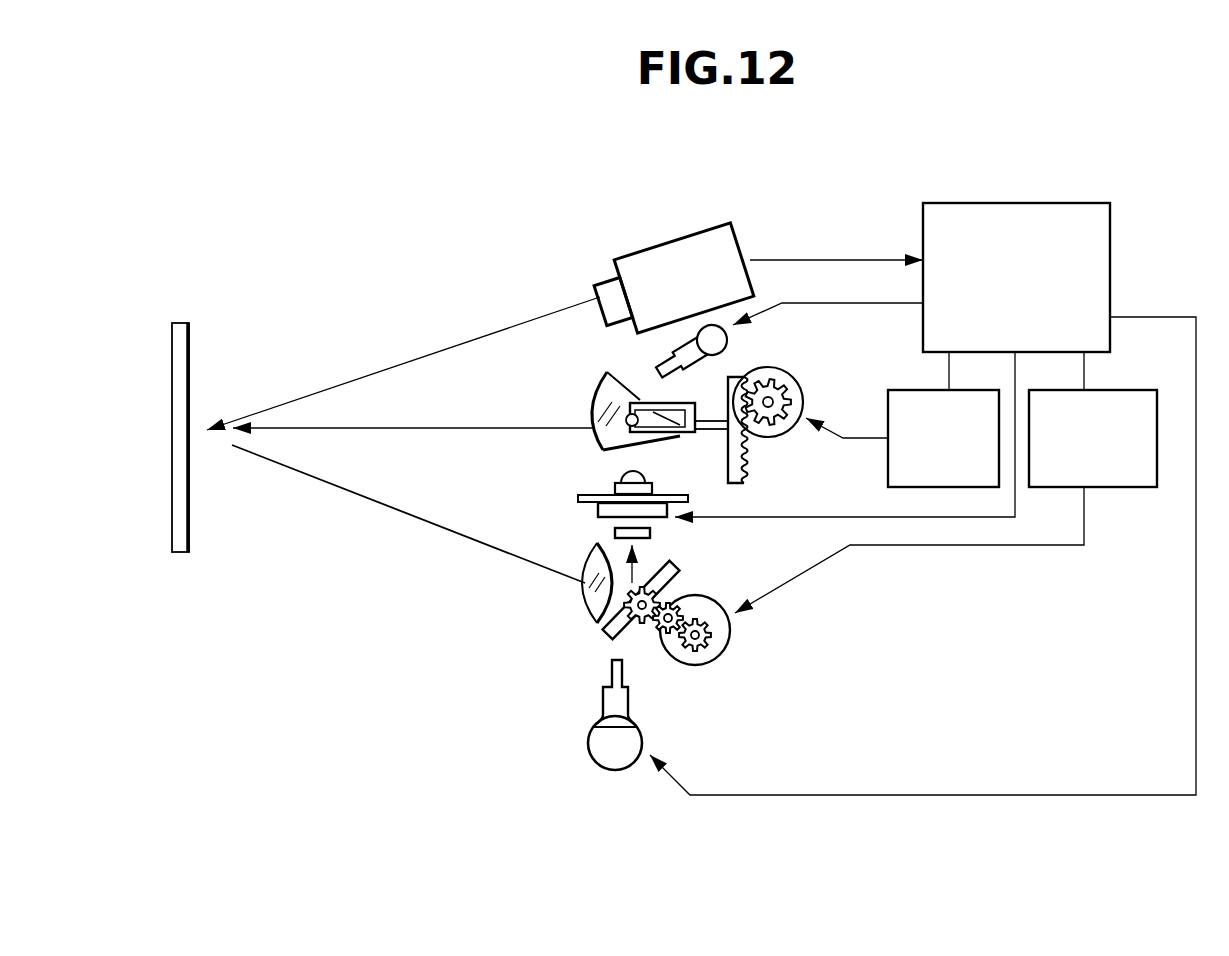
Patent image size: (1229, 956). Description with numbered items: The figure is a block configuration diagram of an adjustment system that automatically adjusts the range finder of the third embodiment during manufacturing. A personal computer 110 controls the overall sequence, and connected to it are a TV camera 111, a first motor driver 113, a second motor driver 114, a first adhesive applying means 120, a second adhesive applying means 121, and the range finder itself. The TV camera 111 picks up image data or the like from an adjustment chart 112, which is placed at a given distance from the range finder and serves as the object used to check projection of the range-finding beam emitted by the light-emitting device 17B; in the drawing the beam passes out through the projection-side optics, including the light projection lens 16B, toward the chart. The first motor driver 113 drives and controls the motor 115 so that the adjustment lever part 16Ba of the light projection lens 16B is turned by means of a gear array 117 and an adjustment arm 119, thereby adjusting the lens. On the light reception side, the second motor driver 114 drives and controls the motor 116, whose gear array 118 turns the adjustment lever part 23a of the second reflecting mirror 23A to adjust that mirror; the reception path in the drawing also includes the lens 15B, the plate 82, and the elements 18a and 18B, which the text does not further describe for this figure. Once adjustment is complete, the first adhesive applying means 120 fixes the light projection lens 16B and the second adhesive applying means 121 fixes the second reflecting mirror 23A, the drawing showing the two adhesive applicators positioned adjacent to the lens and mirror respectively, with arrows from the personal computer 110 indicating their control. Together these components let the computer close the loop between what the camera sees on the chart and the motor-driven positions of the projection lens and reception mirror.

The personal computer 110 is at (1085, 212).
The TV camera 111 is at (710, 247).
The adjustment chart 112 is at (190, 353).
The first motor driver 113 is at (888, 458).
The second motor driver 114 is at (1130, 481).
The motor 115 is at (800, 390).
The motor 116 is at (718, 648).
The gear array 117 is at (740, 485).
The gear array 118 is at (613, 625).
The adjustment arm 119 is at (680, 437).
The first adhesive applying means 120 is at (727, 342).
The second adhesive applying means 121 is at (605, 748).
The lens 15B is at (583, 598).
The light projection lens 16B is at (596, 405).
The adjustment lever part 16Ba is at (628, 416).
The light-emitting device 17B is at (620, 478).
The plate 82 is at (600, 496).
The light emitting element 18a is at (600, 510).
The light emitting element 18B is at (615, 533).
The adjustment lever part 23a is at (675, 575).
The second reflecting mirror 23A is at (602, 634).